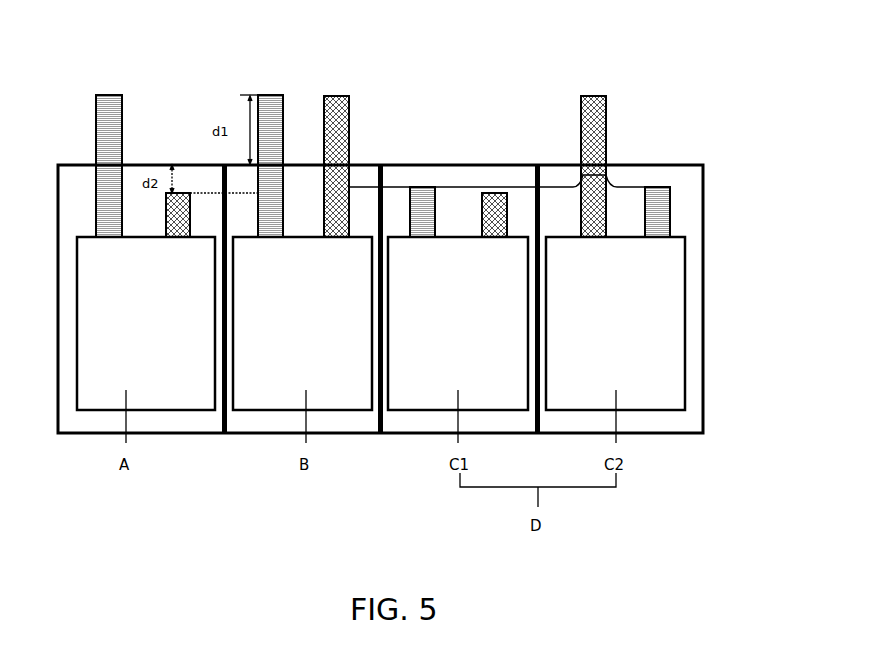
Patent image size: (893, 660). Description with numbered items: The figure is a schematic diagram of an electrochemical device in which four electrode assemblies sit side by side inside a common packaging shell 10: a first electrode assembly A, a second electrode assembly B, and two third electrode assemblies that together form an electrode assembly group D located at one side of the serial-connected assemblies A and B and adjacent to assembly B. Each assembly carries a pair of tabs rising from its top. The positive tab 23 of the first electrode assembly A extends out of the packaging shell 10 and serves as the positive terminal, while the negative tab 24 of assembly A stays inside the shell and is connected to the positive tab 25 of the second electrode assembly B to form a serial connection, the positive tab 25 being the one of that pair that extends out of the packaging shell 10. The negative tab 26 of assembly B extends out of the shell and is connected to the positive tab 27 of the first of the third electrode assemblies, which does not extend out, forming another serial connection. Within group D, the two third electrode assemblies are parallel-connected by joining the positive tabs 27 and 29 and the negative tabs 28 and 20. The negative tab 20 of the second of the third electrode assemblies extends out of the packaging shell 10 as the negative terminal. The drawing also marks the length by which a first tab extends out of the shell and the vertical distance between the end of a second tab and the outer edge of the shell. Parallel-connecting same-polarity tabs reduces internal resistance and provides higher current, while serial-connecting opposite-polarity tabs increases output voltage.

The packaging shell 10 is at (692, 184).
The negative tab of third electrode assembly C2 20 is at (593, 105).
The positive tab of first electrode assembly A 23 is at (108, 105).
The negative tab of first electrode assembly A 24 is at (178, 193).
The positive tab of second electrode assembly B 25 is at (270, 105).
The negative tab of second electrode assembly B 26 is at (336, 105).
The positive tab of third electrode assembly C1 27 is at (420, 187).
The negative tab of third electrode assembly C1 28 is at (495, 193).
The positive tab of third electrode assembly C2 29 is at (656, 187).